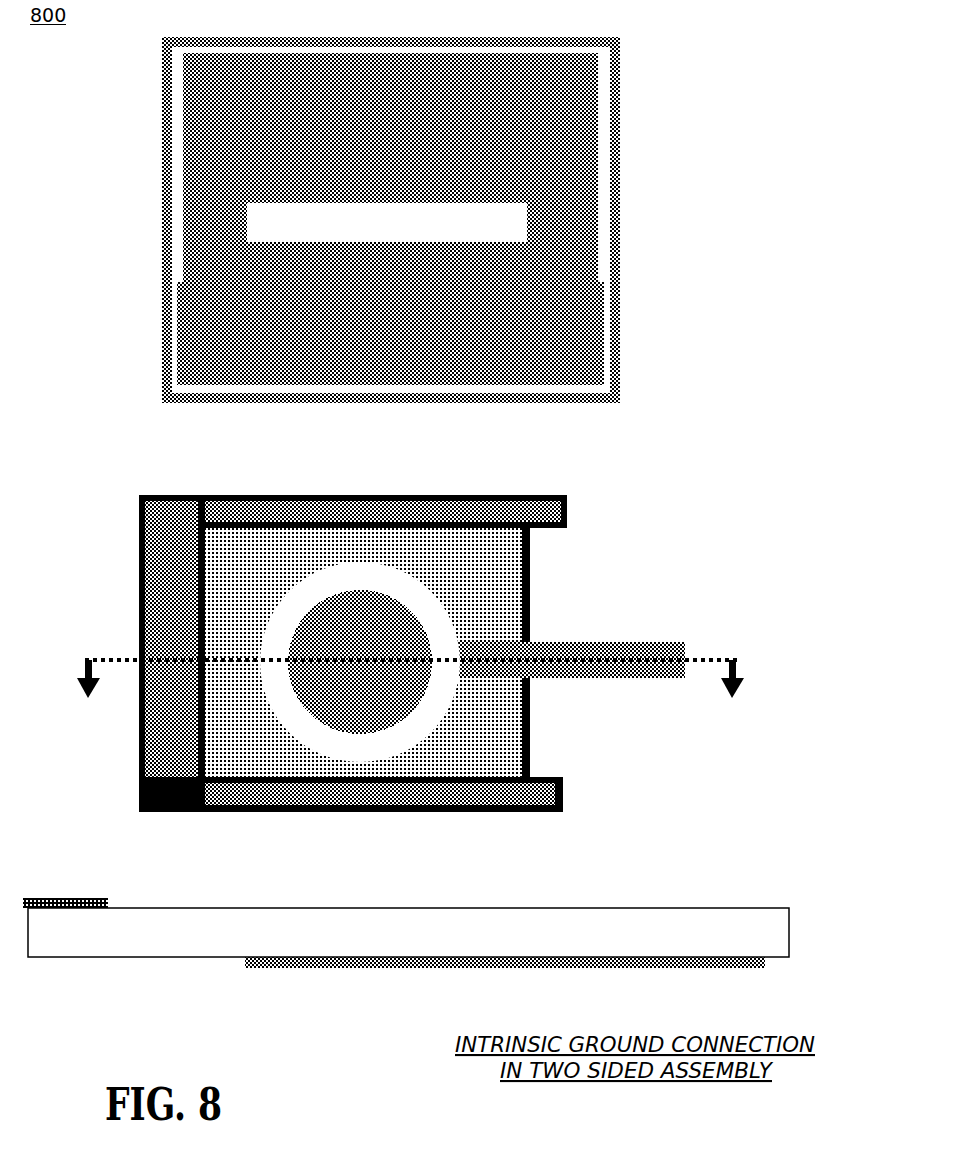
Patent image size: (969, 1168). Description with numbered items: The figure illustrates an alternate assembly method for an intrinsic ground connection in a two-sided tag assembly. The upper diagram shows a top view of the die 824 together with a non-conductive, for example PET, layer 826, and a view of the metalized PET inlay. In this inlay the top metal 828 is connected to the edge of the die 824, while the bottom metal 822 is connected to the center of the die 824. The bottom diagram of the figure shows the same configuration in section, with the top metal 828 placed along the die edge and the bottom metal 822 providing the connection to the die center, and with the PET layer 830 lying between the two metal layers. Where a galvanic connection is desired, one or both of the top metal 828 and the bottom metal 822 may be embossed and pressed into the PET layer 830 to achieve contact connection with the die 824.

The bottom metal 822 is at (630, 74).
The die 824 is at (312, 152).
The non-conductive layer 826 is at (582, 200).
The top metal 828 is at (141, 496).
The PET layer 830 is at (692, 921).